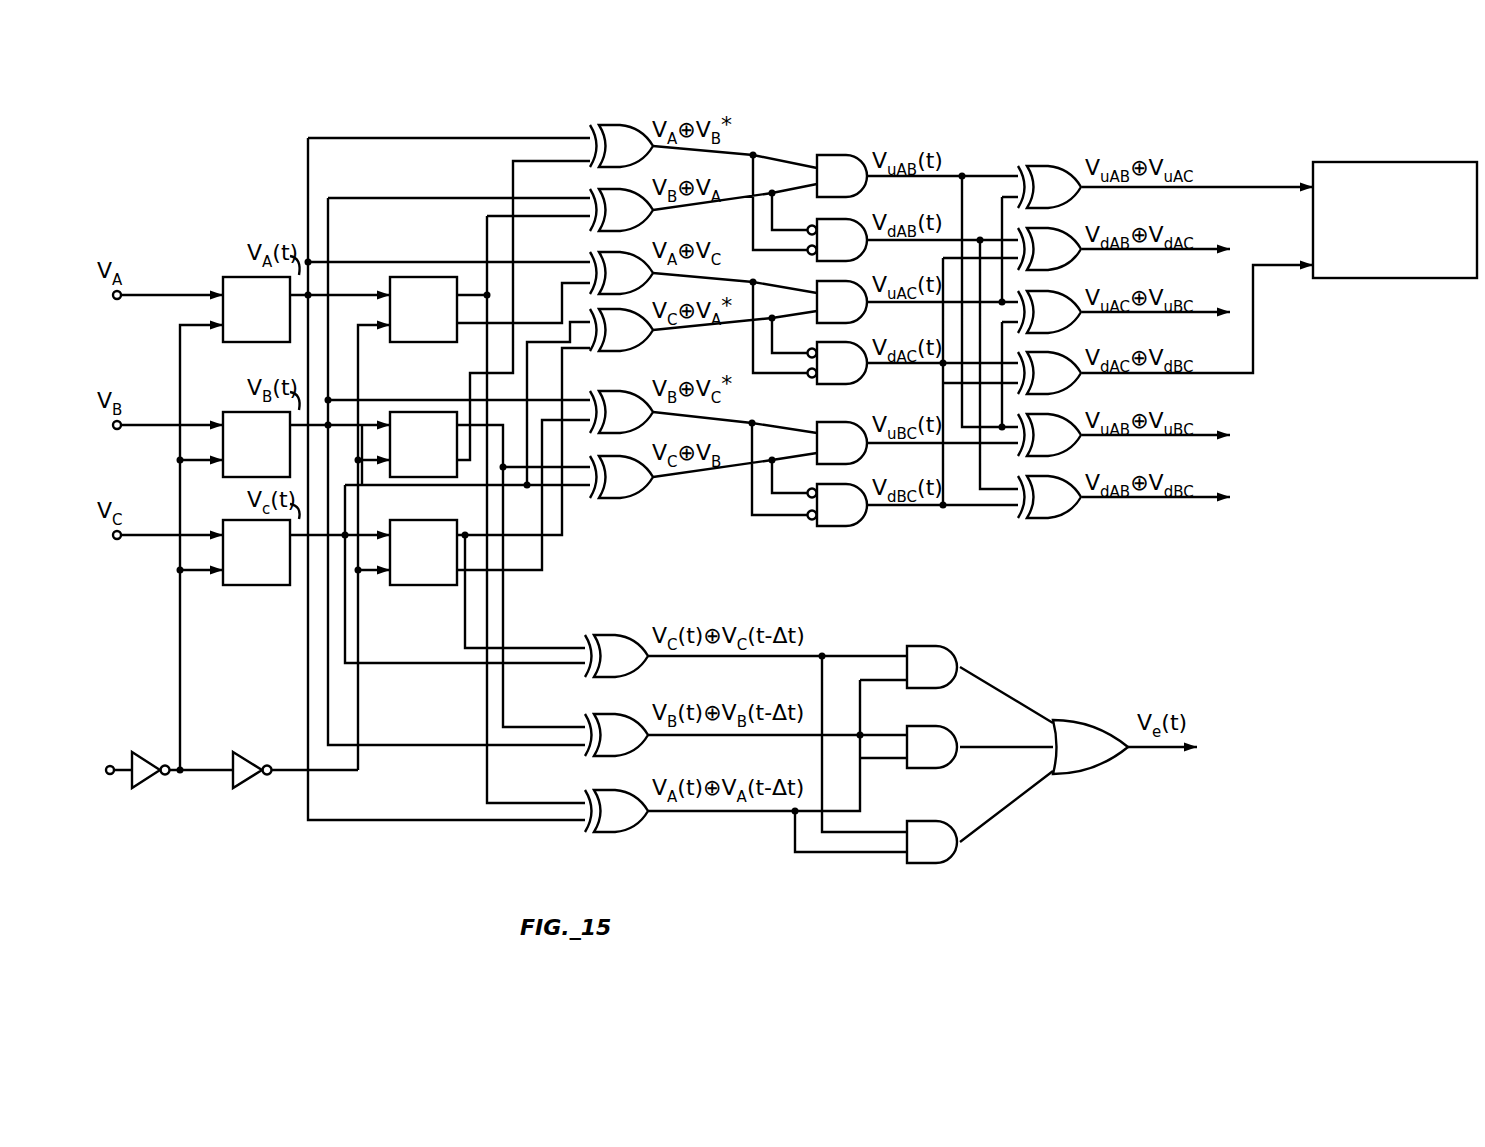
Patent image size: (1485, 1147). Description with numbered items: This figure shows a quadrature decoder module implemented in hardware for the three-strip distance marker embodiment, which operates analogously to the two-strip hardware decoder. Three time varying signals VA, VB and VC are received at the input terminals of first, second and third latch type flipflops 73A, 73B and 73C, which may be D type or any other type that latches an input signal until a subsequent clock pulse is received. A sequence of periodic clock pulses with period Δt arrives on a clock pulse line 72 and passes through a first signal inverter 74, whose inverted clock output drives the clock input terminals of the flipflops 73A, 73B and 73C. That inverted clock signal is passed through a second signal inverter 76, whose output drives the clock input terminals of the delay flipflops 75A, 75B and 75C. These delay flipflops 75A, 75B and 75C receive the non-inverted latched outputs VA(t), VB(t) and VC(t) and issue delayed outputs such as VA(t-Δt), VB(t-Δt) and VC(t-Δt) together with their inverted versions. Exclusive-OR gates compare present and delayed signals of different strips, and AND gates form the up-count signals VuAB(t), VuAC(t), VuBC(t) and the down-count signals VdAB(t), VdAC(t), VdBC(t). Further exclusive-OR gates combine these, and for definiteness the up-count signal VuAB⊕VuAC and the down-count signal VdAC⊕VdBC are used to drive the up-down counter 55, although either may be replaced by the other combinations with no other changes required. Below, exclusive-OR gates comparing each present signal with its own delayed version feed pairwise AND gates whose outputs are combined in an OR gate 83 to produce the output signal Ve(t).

The first latch type flipflop 73A is at (250, 282).
The second latch type flipflop 73B is at (237, 414).
The third latch type flipflop for signal VC 73C is at (250, 586).
The third flipflop 75A is at (424, 282).
The fourth flipflop 75B is at (424, 414).
The delay flipflop for signal VC 75C is at (424, 522).
The clock pulse line 72 is at (118, 774).
The first signal inverter 74 is at (152, 753).
The second signal inverter 76 is at (252, 753).
The up-down counter 55 is at (1363, 280).
The OR gate 83 is at (1098, 770).